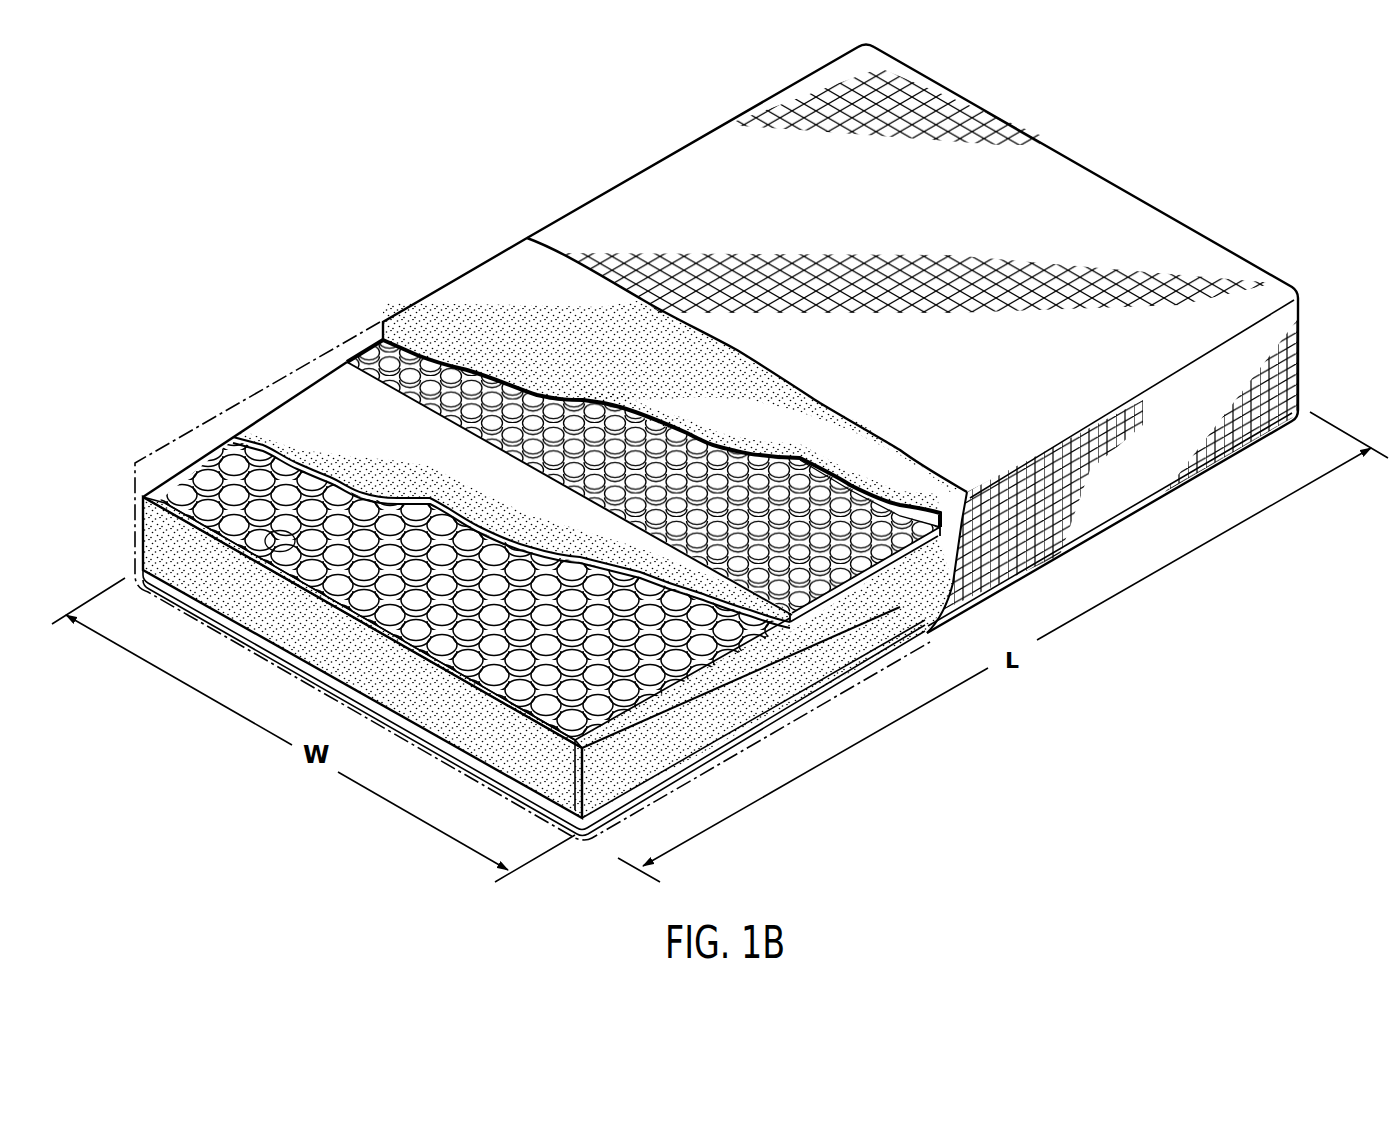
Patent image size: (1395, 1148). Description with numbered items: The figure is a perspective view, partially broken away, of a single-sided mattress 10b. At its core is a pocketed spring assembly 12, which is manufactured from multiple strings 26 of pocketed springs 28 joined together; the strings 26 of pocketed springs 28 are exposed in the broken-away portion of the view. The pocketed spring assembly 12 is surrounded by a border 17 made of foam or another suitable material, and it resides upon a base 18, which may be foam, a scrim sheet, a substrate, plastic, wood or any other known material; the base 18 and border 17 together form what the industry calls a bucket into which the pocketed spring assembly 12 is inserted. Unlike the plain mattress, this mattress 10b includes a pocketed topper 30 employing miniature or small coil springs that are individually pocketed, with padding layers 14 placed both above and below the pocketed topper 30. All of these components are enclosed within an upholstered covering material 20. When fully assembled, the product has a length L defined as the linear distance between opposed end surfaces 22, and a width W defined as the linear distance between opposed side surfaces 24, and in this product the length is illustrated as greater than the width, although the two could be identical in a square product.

The single-sided mattress 10b is at (478, 139).
The pocketed spring assembly 12 is at (236, 460).
The padding layer 14 is at (552, 290).
The border 17 is at (735, 708).
The base 18 is at (138, 590).
The upholstered covering material 20 is at (922, 210).
The end surface 22 is at (1302, 325).
The side surface 24 is at (1192, 436).
The string of pocketed springs 26 is at (266, 540).
The pocketed spring 28 is at (193, 494).
The pocketed topper 30 is at (367, 350).